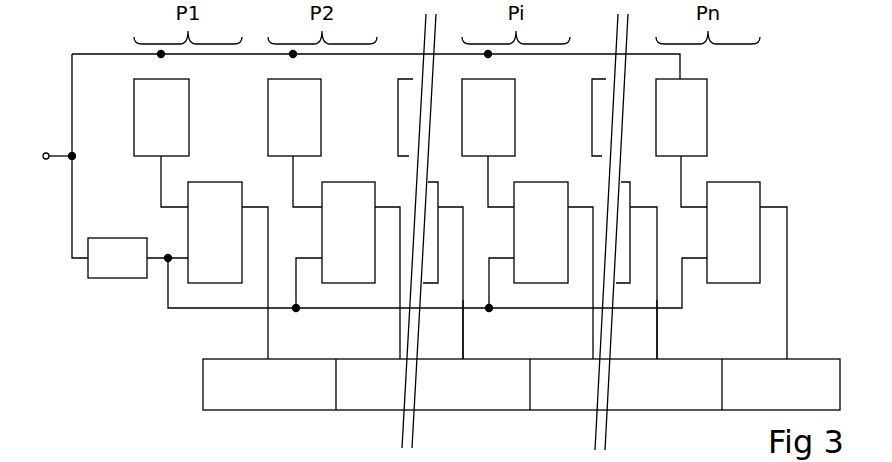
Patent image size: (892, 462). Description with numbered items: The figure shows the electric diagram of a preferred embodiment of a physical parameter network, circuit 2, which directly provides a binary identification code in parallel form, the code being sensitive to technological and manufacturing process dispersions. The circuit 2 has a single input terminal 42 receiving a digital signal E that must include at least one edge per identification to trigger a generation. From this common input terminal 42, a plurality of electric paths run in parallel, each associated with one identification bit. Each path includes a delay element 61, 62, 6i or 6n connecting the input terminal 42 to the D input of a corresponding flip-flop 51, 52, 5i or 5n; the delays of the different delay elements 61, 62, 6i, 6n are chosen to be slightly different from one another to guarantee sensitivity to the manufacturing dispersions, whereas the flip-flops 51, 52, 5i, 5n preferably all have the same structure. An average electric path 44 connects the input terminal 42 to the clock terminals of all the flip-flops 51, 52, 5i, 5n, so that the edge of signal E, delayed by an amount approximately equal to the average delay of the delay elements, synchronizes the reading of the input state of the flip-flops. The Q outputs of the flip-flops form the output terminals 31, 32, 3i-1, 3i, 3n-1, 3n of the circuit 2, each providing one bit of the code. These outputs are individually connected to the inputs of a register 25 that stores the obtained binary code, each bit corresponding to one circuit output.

The circuit 2 is at (124, 380).
The register 25 is at (203, 382).
The output terminal 31 is at (268, 330).
The output terminal 32 is at (400, 327).
The output terminal 3i-1 is at (463, 330).
The output terminal 3i is at (593, 330).
The output terminal 3n-1 is at (657, 330).
The output terminal 3n is at (787, 325).
The input terminal 42 is at (47, 160).
The average electric path 44 is at (92, 278).
The flip-flop 51 is at (212, 182).
The flip-flop 52 is at (345, 182).
The flip-flop 5i is at (538, 182).
The flip-flop 5n is at (730, 182).
The delay element 61 is at (189, 100).
The delay element 62 is at (321, 100).
The delay element 6i is at (515, 100).
The delay element 6n is at (707, 100).